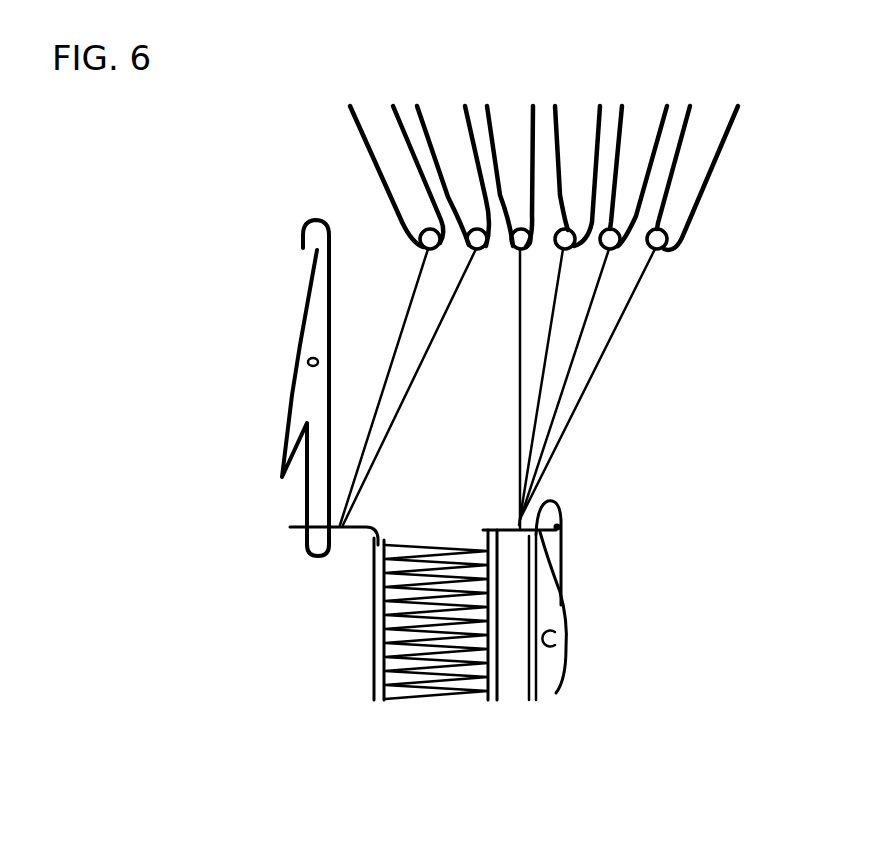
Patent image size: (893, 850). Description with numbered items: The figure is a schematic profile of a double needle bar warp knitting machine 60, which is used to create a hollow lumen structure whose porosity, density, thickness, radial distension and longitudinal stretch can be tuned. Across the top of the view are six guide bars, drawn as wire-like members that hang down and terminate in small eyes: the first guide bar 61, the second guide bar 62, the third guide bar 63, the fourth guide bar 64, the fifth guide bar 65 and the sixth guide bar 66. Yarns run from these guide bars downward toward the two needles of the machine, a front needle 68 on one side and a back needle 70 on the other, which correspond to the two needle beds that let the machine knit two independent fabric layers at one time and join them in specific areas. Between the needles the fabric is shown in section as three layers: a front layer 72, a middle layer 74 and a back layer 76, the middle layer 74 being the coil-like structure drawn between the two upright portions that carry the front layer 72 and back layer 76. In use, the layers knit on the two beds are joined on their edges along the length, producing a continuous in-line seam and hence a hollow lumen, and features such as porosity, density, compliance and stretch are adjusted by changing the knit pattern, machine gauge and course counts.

The double needle bar warp knitting machine 60 is at (128, 212).
The first guide bar 61 is at (702, 155).
The second guide bar 62 is at (637, 155).
The third guide bar 63 is at (575, 165).
The fourth guide bar 64 is at (518, 157).
The fifth guide bar 65 is at (460, 168).
The sixth guide bar 66 is at (395, 162).
The front needle 68 is at (558, 528).
The back needle 70 is at (307, 527).
The front layer 72 is at (493, 697).
The middle layer 74 is at (430, 680).
The back layer 76 is at (382, 702).